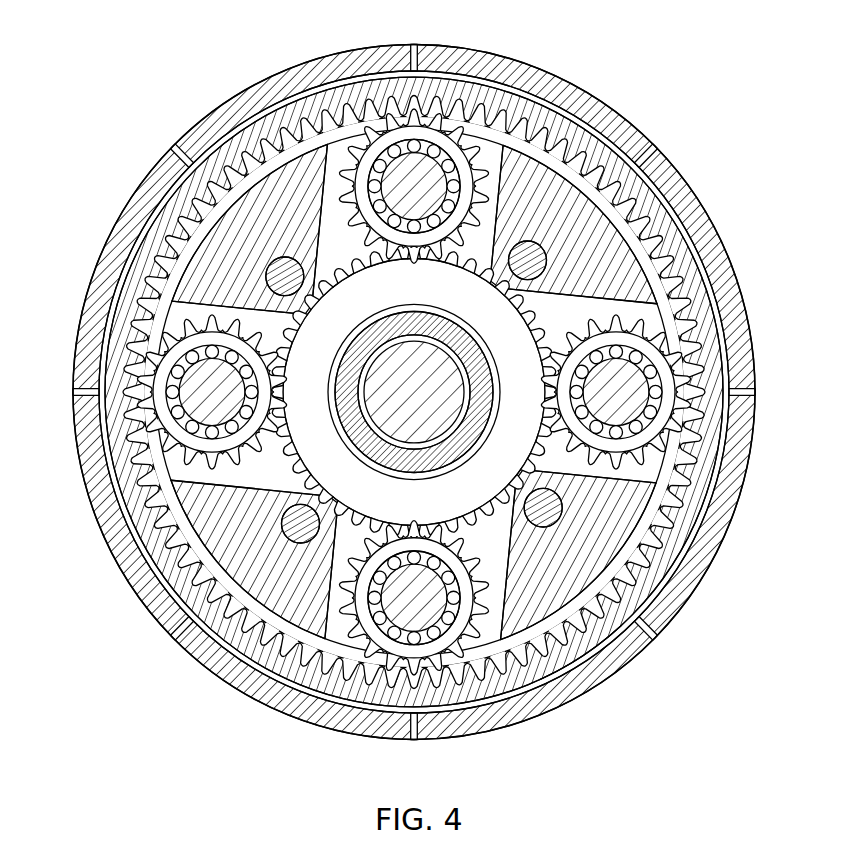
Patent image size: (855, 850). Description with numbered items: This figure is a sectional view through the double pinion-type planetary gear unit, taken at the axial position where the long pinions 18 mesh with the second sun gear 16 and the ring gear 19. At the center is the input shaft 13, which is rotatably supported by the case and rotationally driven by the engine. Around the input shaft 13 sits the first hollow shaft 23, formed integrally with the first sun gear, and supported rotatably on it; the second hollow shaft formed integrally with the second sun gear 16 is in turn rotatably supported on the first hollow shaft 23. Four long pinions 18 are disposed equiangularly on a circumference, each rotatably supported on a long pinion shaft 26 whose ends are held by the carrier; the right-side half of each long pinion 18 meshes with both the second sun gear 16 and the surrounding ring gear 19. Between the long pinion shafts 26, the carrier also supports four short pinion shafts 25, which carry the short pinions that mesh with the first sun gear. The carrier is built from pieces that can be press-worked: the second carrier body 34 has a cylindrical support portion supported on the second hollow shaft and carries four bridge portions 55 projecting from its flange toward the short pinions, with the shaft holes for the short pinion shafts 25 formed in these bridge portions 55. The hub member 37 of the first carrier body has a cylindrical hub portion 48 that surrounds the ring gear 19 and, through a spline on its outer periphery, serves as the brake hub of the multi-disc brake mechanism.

The hub member 37 is at (395, 410).
The cylindrical hub portion 48 is at (290, 702).
The ring gear 19 is at (392, 410).
The second carrier body 34 is at (580, 653).
The first hollow shaft 23 is at (417, 409).
The short pinion shaft 25 is at (414, 392).
The second sun gear 16 is at (409, 340).
The bridge portion 55 is at (414, 391).
The input shaft 13 is at (414, 392).
The long pinion 18 is at (410, 402).
The long pinion shaft 26 is at (443, 128).